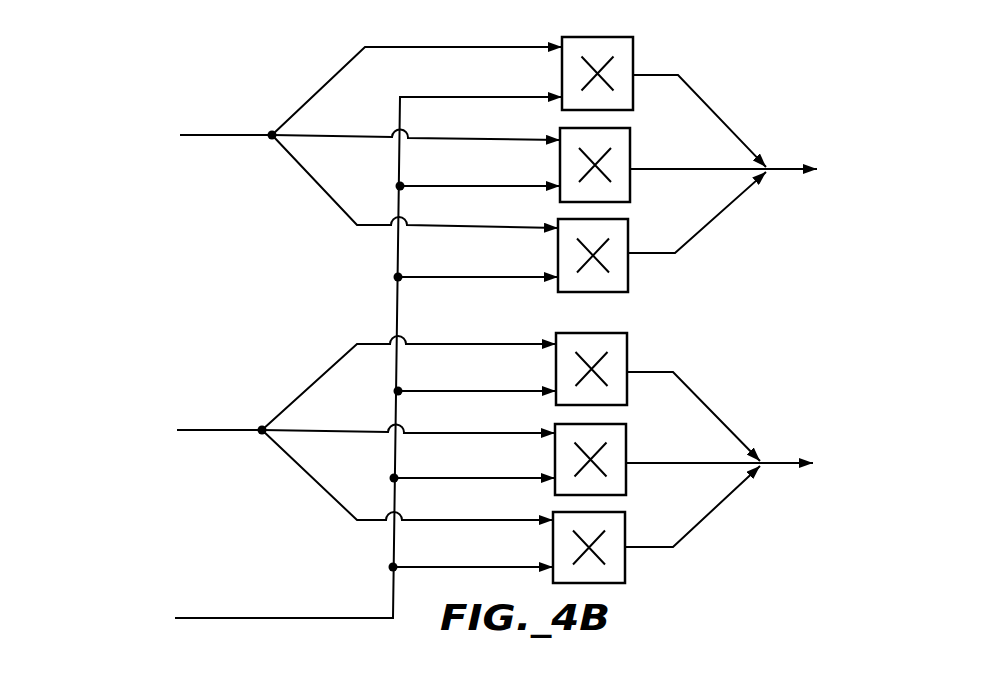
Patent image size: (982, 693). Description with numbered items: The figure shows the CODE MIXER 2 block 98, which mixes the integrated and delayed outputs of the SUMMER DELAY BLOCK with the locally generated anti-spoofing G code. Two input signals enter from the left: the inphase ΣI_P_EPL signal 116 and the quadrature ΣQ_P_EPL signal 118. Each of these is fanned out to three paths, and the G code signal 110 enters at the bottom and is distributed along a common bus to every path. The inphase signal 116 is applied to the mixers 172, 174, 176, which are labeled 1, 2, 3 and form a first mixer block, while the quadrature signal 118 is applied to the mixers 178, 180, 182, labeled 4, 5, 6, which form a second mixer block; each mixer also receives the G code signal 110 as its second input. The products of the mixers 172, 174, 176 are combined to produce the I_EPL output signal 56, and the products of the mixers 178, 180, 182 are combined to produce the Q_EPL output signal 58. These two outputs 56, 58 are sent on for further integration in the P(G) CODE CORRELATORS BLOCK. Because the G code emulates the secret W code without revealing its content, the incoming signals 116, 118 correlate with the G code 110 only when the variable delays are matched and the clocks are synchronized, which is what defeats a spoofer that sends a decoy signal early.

The CODE MIXER 2 98 is at (103, 510).
The inphase ΣI_P_EPL signal 116 is at (248, 136).
The quadrature ΣQ_P_EPL signal 118 is at (243, 432).
The G code signal 110 is at (243, 617).
The multiplier 1 172 is at (562, 73).
The multiplier 2 174 is at (560, 163).
The multiplier 3 176 is at (558, 251).
The multiplier 4 178 is at (556, 367).
The multiplier 5 180 is at (555, 458).
The multiplier 6 182 is at (553, 543).
The first multiplier 1 is at (608, 73).
The second multiplier 2 is at (607, 165).
The third multiplier 3 is at (606, 255).
The fourth multiplier 4 is at (604, 369).
The fifth multiplier 5 is at (603, 459).
The sixth multiplier 6 is at (602, 547).
The I_EPL output signal 56 is at (777, 168).
The Q_EPL output signal 58 is at (770, 462).